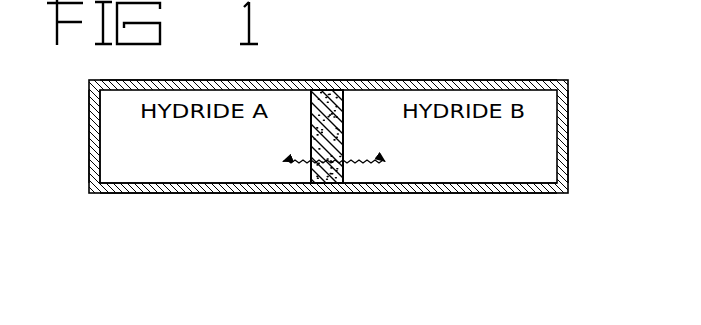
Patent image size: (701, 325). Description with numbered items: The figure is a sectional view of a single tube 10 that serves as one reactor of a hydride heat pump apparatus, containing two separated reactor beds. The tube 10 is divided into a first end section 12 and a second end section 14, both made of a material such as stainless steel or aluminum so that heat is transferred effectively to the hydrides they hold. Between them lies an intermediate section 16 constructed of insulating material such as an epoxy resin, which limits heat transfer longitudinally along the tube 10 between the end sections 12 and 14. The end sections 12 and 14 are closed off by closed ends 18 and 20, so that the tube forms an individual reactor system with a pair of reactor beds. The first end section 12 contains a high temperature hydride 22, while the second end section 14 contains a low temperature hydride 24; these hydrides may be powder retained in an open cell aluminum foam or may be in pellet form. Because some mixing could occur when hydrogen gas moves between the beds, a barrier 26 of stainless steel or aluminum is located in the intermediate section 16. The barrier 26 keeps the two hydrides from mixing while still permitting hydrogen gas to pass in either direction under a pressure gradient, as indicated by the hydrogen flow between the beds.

The tube 10 is at (568, 71).
The first end section 12 is at (192, 79).
The second end section 14 is at (472, 197).
The intermediate section 16 is at (326, 79).
The closed end 18 is at (88, 107).
The closed end 20 is at (570, 115).
The high temperature hydride 22 is at (114, 158).
The low temperature hydride 24 is at (480, 148).
The barrier 26 is at (321, 143).